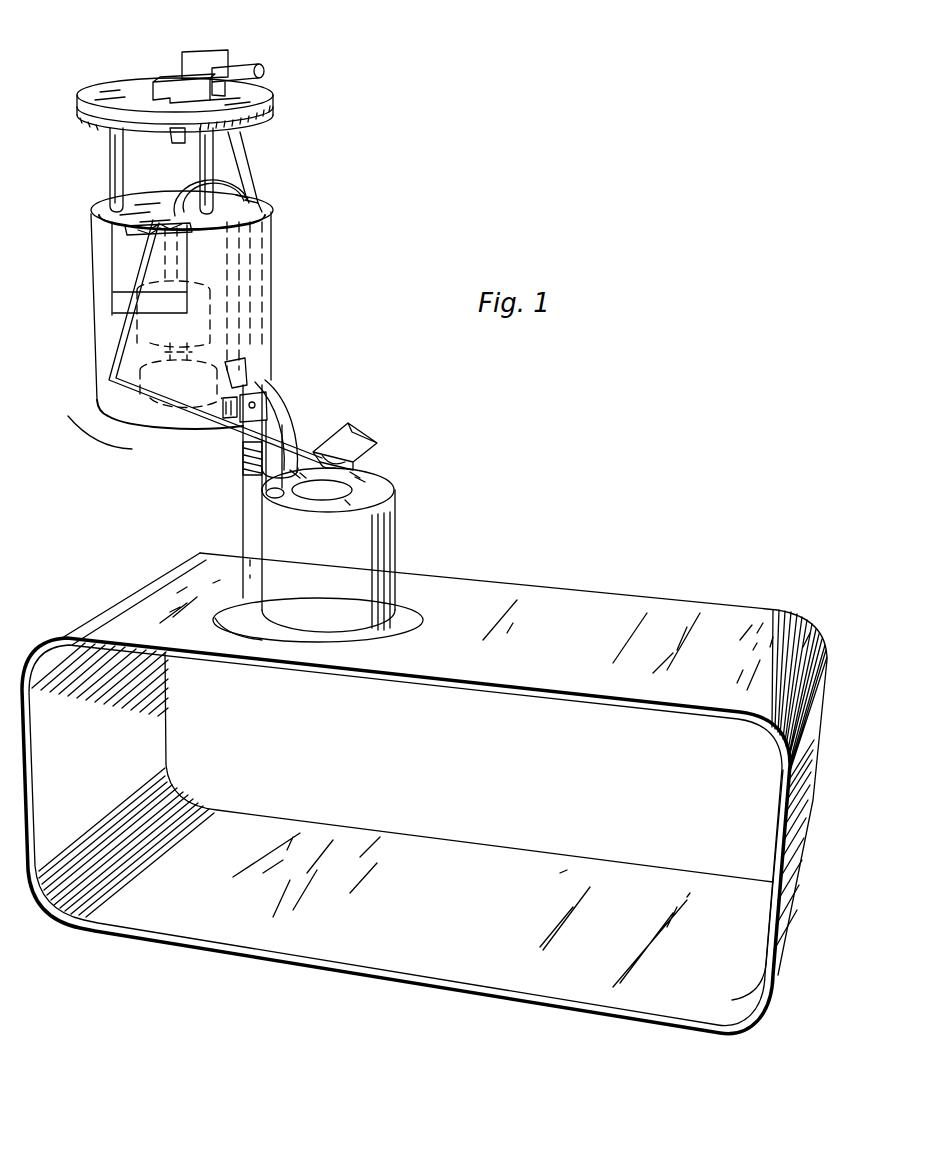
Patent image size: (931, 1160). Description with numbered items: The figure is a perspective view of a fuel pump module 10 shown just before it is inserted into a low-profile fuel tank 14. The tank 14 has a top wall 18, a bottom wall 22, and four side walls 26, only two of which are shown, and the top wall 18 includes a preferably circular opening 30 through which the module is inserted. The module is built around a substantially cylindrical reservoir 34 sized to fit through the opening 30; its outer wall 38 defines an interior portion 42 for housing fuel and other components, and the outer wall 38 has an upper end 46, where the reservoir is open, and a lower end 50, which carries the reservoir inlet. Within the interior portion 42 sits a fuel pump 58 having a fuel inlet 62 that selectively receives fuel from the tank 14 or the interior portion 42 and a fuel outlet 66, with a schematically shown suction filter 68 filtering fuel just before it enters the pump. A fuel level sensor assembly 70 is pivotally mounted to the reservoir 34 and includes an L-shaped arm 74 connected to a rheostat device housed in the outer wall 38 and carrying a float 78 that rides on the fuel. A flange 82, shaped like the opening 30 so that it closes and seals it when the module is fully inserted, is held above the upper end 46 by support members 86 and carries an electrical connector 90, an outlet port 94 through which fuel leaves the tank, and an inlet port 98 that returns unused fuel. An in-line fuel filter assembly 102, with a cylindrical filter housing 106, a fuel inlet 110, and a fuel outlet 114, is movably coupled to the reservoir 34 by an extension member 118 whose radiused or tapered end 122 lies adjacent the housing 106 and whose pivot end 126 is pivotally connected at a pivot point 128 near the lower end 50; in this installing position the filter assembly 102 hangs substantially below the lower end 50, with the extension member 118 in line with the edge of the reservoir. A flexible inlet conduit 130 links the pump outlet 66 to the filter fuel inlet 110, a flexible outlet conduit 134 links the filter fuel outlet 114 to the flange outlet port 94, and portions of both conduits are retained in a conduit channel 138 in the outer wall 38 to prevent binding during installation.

The fuel pump module 10 is at (440, 84).
The fuel tank 14 is at (733, 607).
The top wall 18 is at (580, 646).
The bottom wall 22 is at (490, 920).
The side walls 26 is at (105, 790).
The opening 30 is at (440, 600).
The reservoir 34 is at (100, 416).
The outer wall 38 is at (100, 326).
The interior portion 42 is at (143, 170).
The upper end 46 is at (92, 212).
The lower end 50 is at (128, 440).
The fuel pump 58 is at (98, 364).
The fuel inlet 62 is at (272, 342).
The fuel outlet 66 is at (118, 293).
The suction filter 68 is at (170, 405).
The fuel level sensor assembly 70 is at (382, 408).
The L-shaped arm 74 is at (150, 252).
The float 78 is at (365, 440).
The flange 82 is at (128, 82).
The support members 86 is at (110, 140).
The electrical connector 90 is at (163, 80).
The outlet port 94 is at (248, 70).
The inlet port 98 is at (210, 62).
The in-line fuel filter assembly 102 is at (379, 550).
The filter housing 106 is at (330, 588).
The fuel inlet 110 is at (265, 496).
The fuel outlet 114 is at (332, 478).
The extension member 118 is at (250, 517).
The radiused or tapered end 122 is at (143, 580).
The pivot end 126 is at (240, 455).
The pivot point 128 is at (258, 405).
The flexible inlet conduit 130 is at (240, 198).
The flexible outlet conduit 134 is at (245, 172).
The conduit channel 138 is at (270, 252).